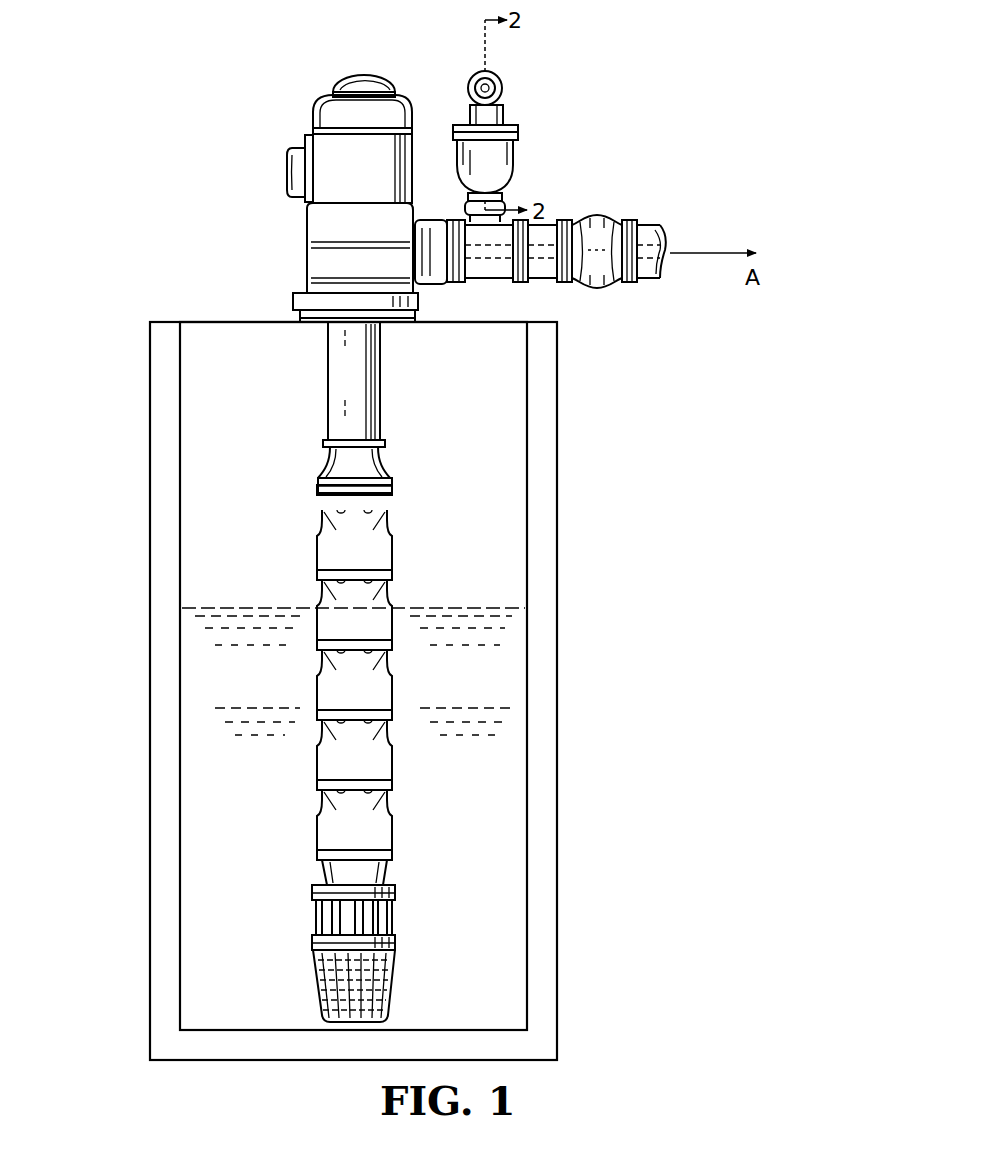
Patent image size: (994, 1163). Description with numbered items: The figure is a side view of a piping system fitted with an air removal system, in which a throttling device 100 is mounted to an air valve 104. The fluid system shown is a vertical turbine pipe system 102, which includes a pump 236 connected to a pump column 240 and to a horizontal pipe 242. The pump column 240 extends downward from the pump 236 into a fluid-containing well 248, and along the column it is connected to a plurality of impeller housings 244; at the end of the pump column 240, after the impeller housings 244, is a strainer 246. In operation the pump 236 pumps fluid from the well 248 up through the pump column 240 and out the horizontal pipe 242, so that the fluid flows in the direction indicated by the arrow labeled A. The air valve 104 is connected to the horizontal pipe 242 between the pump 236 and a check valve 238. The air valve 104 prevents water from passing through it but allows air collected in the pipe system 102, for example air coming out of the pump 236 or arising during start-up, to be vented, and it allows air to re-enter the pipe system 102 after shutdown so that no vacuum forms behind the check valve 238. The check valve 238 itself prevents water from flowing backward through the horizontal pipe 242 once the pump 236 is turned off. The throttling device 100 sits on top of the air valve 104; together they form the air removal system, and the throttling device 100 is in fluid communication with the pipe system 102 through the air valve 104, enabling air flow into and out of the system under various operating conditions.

The throttling device 100 is at (497, 72).
The vertical turbine pipe system 102 is at (660, 503).
The air valve 104 is at (465, 114).
The pump 236 is at (327, 143).
The check valve 238 is at (590, 290).
The pump column 240 is at (375, 400).
The horizontal pipe 242 is at (455, 283).
The impeller housings 244 is at (375, 553).
The strainer 246 is at (395, 980).
The well 248 is at (160, 377).